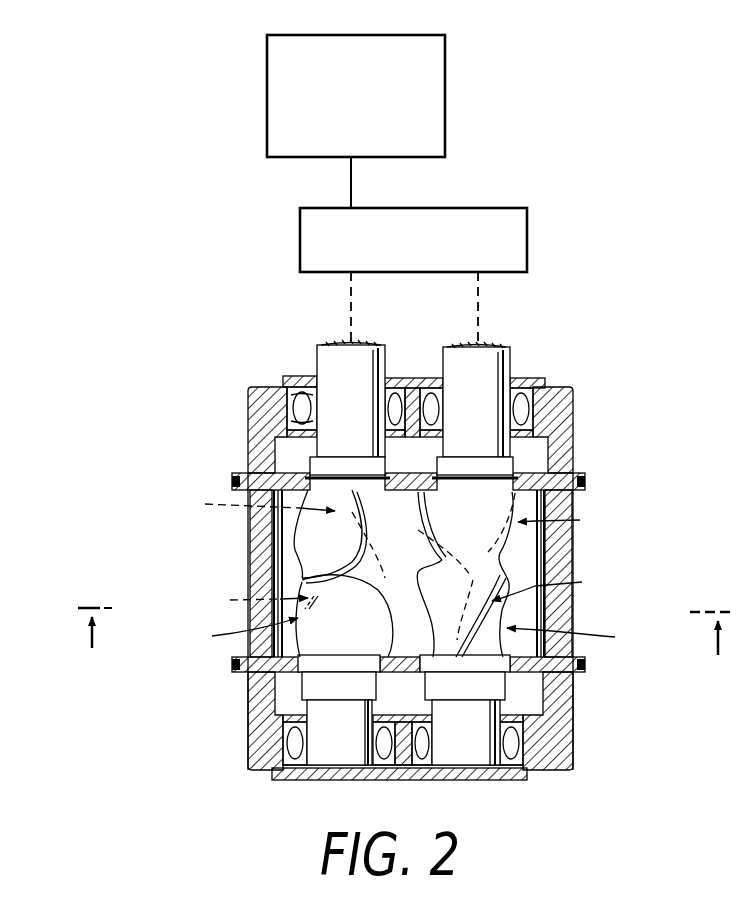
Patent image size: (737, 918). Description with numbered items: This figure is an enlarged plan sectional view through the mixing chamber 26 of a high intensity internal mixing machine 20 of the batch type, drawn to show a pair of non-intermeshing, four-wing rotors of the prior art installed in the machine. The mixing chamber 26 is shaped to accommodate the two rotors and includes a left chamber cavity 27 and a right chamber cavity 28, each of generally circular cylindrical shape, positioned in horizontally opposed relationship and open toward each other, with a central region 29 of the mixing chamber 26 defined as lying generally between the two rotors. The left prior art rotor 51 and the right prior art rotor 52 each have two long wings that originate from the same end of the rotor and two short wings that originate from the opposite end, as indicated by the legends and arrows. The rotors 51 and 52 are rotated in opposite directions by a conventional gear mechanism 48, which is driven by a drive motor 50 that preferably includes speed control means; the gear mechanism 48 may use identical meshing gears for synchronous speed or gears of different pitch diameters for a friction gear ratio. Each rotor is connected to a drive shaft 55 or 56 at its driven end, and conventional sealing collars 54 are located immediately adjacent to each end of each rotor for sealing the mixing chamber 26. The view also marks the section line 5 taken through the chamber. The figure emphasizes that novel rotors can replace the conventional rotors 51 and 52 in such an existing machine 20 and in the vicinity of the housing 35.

The high intensity internal mixing machine 20 is at (236, 333).
The mixing chamber 26 is at (289, 573).
The left chamber cavity 27 is at (298, 545).
The right chamber cavity 28 is at (525, 574).
The central region 29 is at (409, 562).
The housing 35 is at (580, 404).
The gear mechanism 48 is at (528, 240).
The drive motor 50 is at (446, 115).
The left prior art four-wing rotor 51 is at (300, 548).
The right prior art four-wing rotor 52 is at (507, 616).
The sealing collar 54 is at (325, 470).
The drive shaft 55 is at (335, 368).
The drive shaft 56 is at (493, 363).
The section line 5- 5 is at (401, 637).